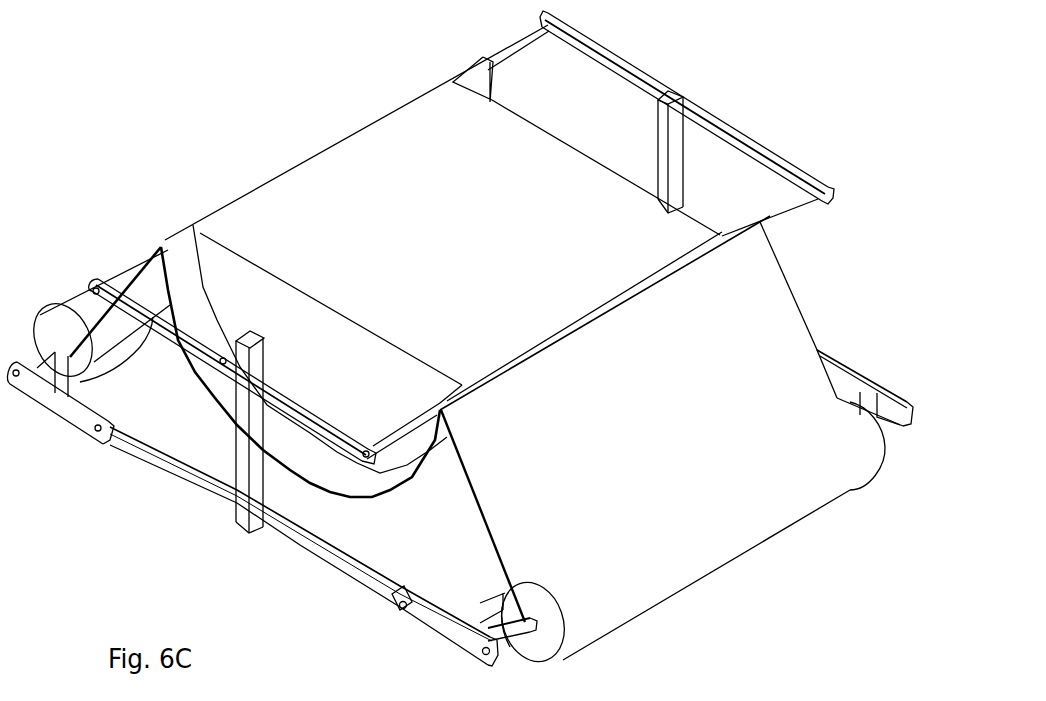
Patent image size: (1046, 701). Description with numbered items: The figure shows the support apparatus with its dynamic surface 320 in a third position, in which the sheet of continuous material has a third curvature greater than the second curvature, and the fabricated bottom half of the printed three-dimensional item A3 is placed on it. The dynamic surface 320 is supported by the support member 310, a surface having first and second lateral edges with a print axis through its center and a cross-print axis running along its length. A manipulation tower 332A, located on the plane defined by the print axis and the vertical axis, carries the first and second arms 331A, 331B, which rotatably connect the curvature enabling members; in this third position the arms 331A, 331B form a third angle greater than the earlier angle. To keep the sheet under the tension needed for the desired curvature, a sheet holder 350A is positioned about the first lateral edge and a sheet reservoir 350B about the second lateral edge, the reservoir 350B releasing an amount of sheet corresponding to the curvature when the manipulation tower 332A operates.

The printed 3D item A3 is at (402, 276).
The support member 310 is at (348, 520).
The dynamic surface 320 is at (365, 493).
The arm 331A is at (58, 395).
The arm 331B is at (332, 410).
The manipulation tower 332A is at (240, 462).
The sheet holder 350A is at (37, 320).
The sheet reservoir 350B is at (852, 387).